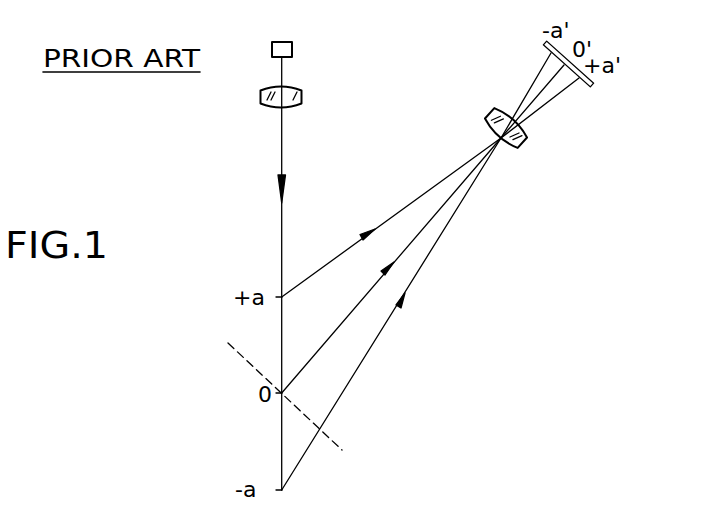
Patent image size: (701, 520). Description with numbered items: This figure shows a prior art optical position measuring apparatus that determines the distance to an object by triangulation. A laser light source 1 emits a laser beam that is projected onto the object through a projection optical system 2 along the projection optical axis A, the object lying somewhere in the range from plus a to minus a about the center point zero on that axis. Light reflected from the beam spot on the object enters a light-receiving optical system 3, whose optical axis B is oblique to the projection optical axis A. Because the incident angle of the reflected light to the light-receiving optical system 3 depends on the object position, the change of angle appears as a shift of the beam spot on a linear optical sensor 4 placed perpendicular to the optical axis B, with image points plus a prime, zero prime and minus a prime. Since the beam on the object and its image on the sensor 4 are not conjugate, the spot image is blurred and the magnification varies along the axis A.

The laser light source 1 is at (292, 47).
The projection optical system 2 is at (301, 93).
The light-receiving optical system 3 is at (527, 148).
The linear optical sensor 4 is at (590, 88).
The projection optical axis A is at (281, 156).
The optical axis of the light-receiving optical system B is at (422, 230).